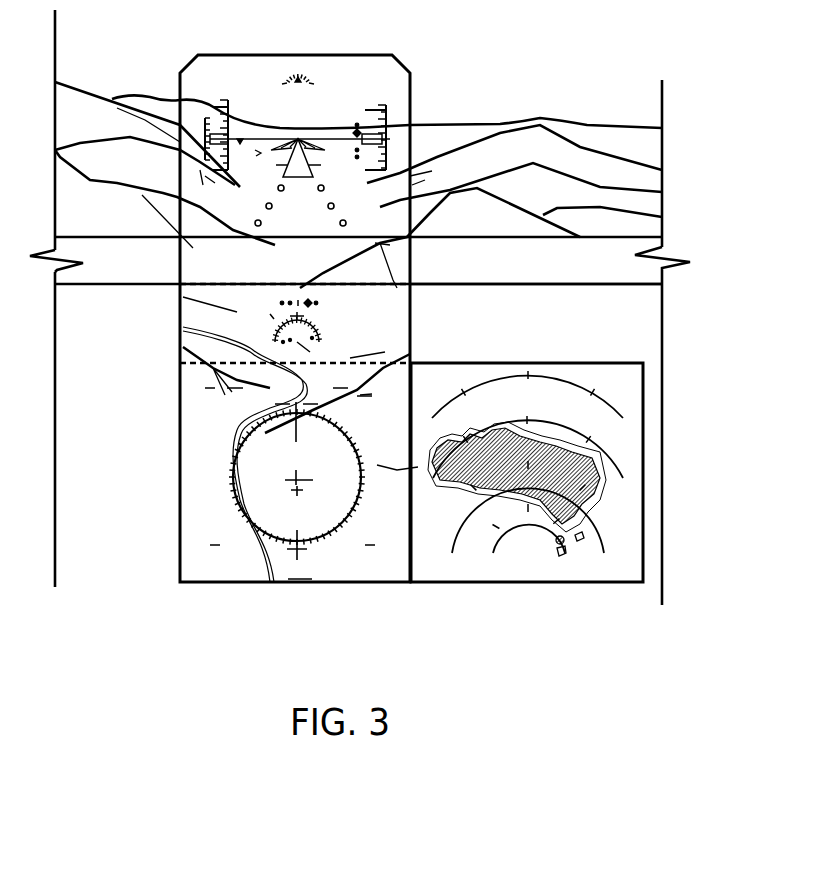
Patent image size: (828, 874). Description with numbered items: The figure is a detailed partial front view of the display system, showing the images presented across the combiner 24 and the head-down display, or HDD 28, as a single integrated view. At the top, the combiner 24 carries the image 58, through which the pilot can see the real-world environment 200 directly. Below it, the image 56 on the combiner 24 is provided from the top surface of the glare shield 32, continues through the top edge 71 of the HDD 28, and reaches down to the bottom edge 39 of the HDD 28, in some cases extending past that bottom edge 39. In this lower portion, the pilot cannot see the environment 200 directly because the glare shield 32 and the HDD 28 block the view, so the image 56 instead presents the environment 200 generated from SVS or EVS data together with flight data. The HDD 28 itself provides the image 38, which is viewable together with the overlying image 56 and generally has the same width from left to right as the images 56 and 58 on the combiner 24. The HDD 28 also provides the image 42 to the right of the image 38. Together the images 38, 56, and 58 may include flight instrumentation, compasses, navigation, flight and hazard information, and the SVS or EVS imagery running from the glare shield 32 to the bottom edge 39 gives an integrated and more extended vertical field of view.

The environment 200 is at (548, 68).
The image 58 is at (237, 67).
The combiner 24 is at (130, 50).
The image 56 is at (202, 307).
The top edge 71 is at (193, 363).
The image 38 is at (235, 477).
The HDD 28 is at (225, 585).
The bottom edge 39 is at (360, 585).
The glare shield 32 is at (525, 332).
The image 42 is at (643, 413).